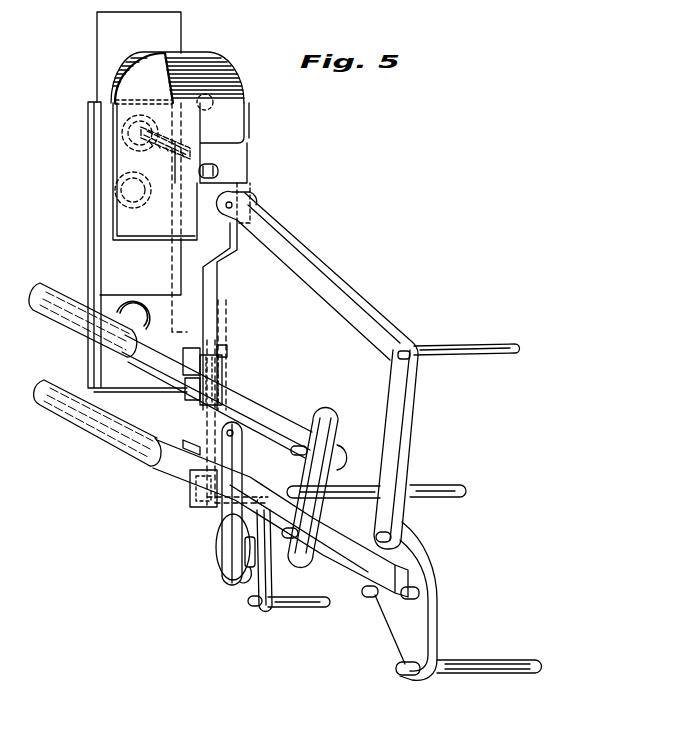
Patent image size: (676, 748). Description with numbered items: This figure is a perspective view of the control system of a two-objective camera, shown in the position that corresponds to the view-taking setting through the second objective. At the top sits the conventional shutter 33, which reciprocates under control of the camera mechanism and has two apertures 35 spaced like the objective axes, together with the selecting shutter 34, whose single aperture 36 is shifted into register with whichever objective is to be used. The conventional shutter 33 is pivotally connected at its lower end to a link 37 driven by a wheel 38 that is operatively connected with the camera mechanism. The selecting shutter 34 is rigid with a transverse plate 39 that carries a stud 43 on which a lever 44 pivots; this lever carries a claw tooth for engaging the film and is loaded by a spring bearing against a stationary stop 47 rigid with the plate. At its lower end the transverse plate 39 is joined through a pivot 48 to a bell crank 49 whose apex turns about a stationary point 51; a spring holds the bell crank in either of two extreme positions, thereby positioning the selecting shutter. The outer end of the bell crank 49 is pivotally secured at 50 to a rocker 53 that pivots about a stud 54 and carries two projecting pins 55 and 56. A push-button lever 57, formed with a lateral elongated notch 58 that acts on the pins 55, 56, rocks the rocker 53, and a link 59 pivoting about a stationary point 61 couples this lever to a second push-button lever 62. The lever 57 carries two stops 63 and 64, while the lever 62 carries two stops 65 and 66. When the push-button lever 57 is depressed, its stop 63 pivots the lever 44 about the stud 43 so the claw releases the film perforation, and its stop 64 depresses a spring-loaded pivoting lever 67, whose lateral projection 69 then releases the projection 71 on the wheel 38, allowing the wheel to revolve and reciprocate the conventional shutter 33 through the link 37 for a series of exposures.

The conventional shutter 33 is at (96, 175).
The selecting shutter 34 is at (182, 33).
The aperture 35 is at (100, 202).
The aperture 36 is at (128, 125).
The link 37 is at (236, 463).
The wheel 38 is at (224, 541).
The transverse plate 39 is at (250, 188).
The stud 43 is at (222, 100).
The lever 44 is at (216, 292).
The stationary stop 47 is at (218, 72).
The pivot 48 is at (258, 213).
The bell crank 49 is at (324, 276).
The pivotal connection 50 is at (378, 537).
The stationary point 51 is at (428, 348).
The rocker 53 is at (408, 555).
The stud 54 is at (405, 677).
The projecting pin 55 is at (366, 598).
The projecting pin 56 is at (418, 592).
The lever 57 is at (114, 430).
The lateral elongated notch 58 is at (345, 568).
The link 59 is at (322, 482).
The stationary point 61 is at (300, 488).
The lever 62 is at (68, 312).
The stop 63 is at (197, 490).
The stop 64 is at (190, 445).
The stop 65 is at (188, 386).
The stop 66 is at (185, 355).
The pivoting lever 67 is at (226, 357).
The lateral projection 69 is at (222, 556).
The projection 71 is at (246, 584).